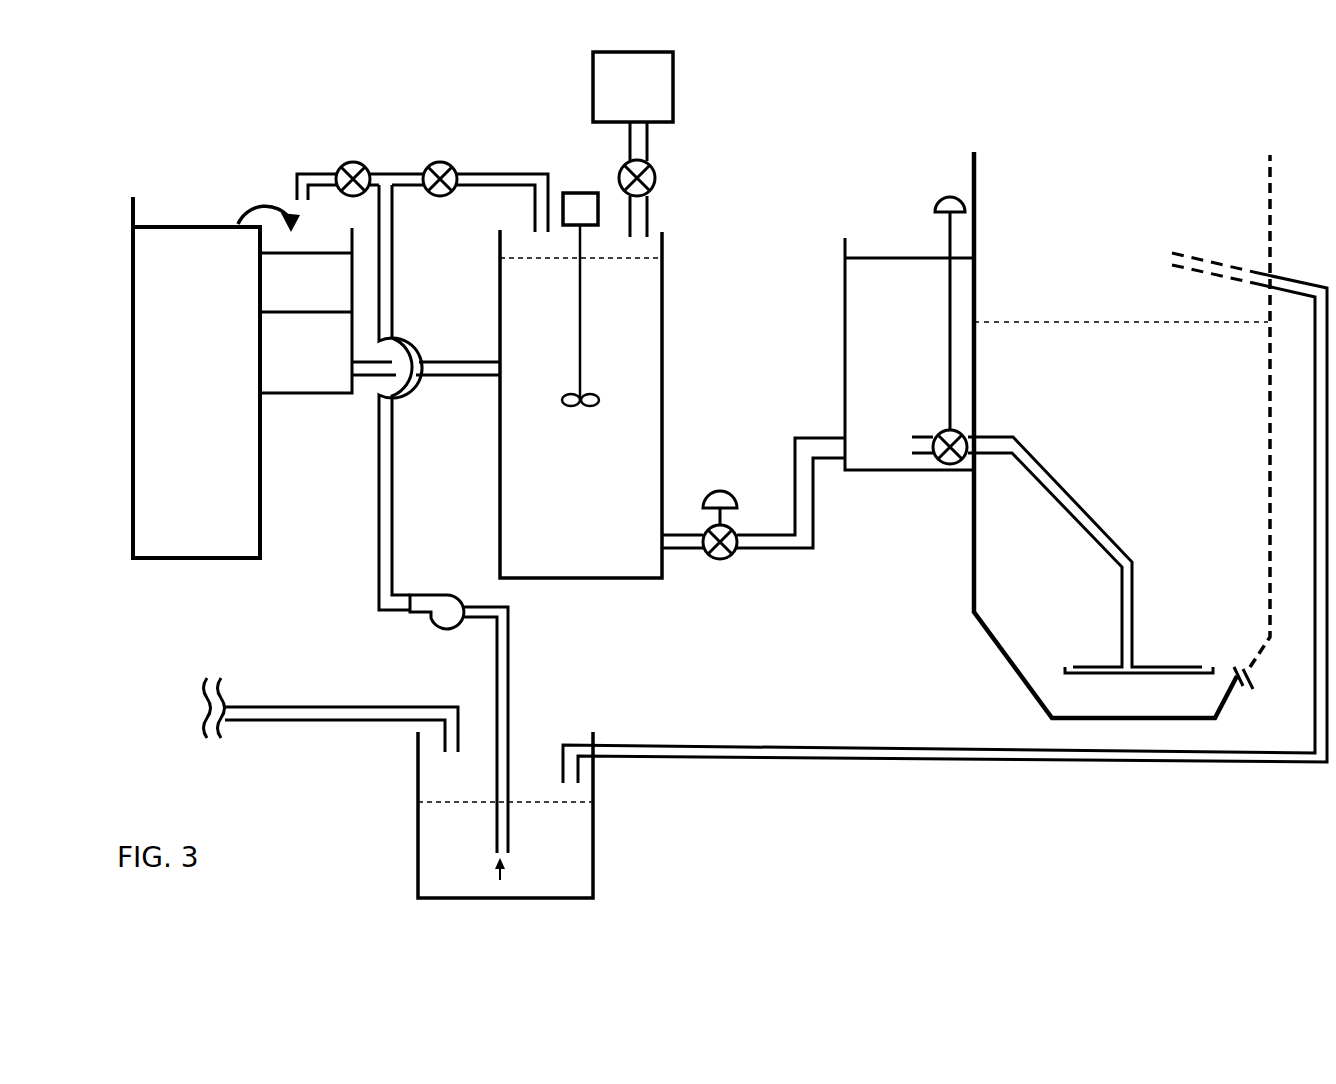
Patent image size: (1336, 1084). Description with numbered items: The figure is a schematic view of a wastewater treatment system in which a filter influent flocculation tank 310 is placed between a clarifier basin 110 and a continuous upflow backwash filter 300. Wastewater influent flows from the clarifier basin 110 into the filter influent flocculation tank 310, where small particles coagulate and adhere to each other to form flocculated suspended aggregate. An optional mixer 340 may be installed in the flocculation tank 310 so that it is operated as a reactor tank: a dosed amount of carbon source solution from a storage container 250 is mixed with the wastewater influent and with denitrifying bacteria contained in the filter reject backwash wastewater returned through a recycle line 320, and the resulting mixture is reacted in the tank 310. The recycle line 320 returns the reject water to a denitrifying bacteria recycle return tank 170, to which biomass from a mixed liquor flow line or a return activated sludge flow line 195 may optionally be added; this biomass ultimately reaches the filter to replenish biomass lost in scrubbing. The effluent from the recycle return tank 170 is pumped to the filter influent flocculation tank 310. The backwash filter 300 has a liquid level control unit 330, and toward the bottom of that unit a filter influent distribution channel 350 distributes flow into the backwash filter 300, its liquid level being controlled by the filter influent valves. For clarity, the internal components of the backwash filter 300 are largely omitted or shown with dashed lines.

The clarifier basin 110 is at (242, 377).
The denitrifying bacteria recycle return tank 170 is at (412, 782).
The return activated sludge (RAS) flow line 195 is at (292, 707).
The storage container 250 is at (633, 144).
The backwash filter 300 is at (948, 662).
The filter influent flocculation tank 310 is at (581, 404).
The recycle line 320 is at (373, 568).
The liquid level control unit 330 is at (843, 365).
The mixer 340 is at (588, 320).
The filter influent distribution channel 350 is at (908, 447).